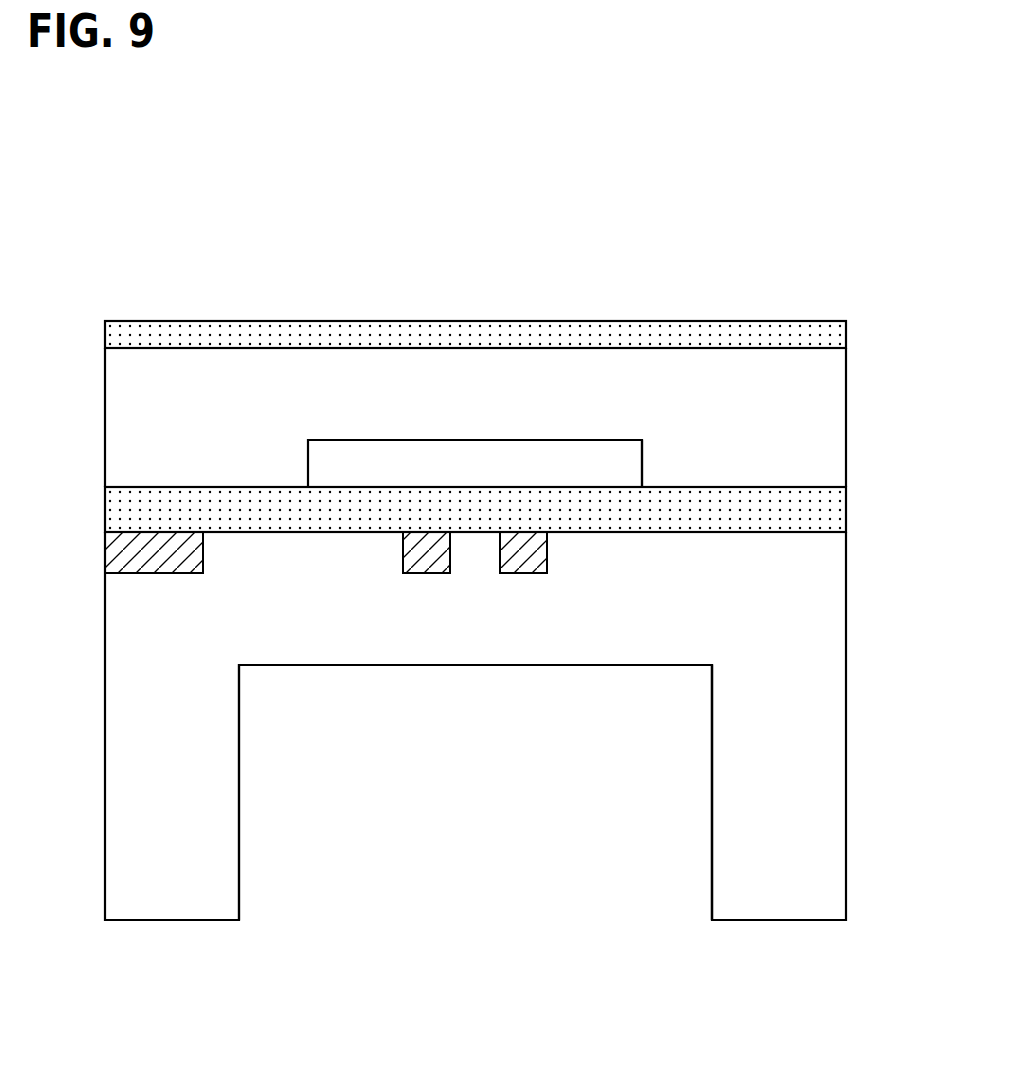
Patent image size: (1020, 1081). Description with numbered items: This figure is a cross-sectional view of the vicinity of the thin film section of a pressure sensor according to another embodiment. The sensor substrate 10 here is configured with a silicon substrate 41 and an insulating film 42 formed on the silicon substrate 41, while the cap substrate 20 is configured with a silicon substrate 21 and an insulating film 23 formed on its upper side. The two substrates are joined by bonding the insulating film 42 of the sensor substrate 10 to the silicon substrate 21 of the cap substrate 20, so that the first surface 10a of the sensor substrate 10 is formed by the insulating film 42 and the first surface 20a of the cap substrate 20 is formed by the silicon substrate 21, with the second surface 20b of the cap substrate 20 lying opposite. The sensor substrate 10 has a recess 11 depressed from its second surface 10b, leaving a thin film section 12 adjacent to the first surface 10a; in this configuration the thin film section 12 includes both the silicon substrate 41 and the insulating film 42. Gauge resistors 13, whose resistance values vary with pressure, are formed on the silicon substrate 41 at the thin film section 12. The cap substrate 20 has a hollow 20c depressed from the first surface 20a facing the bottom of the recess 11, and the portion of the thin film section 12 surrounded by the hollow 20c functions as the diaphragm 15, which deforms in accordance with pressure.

The sensor substrate 10 is at (90, 730).
The first surface 10a is at (142, 487).
The second surface 10b is at (158, 921).
The recess 11 is at (712, 852).
The thin film section 12 is at (374, 692).
The gauge resistor 13 is at (422, 550).
The diaphragm 15 is at (482, 600).
The cap substrate 20 is at (90, 383).
The first surface 20a is at (217, 487).
The second surface 20b is at (147, 320).
The hollow 20c is at (642, 465).
The silicon substrate 21 is at (826, 417).
The insulating film 23 is at (828, 329).
The silicon substrate 41 is at (824, 691).
The insulating film 42 is at (826, 505).